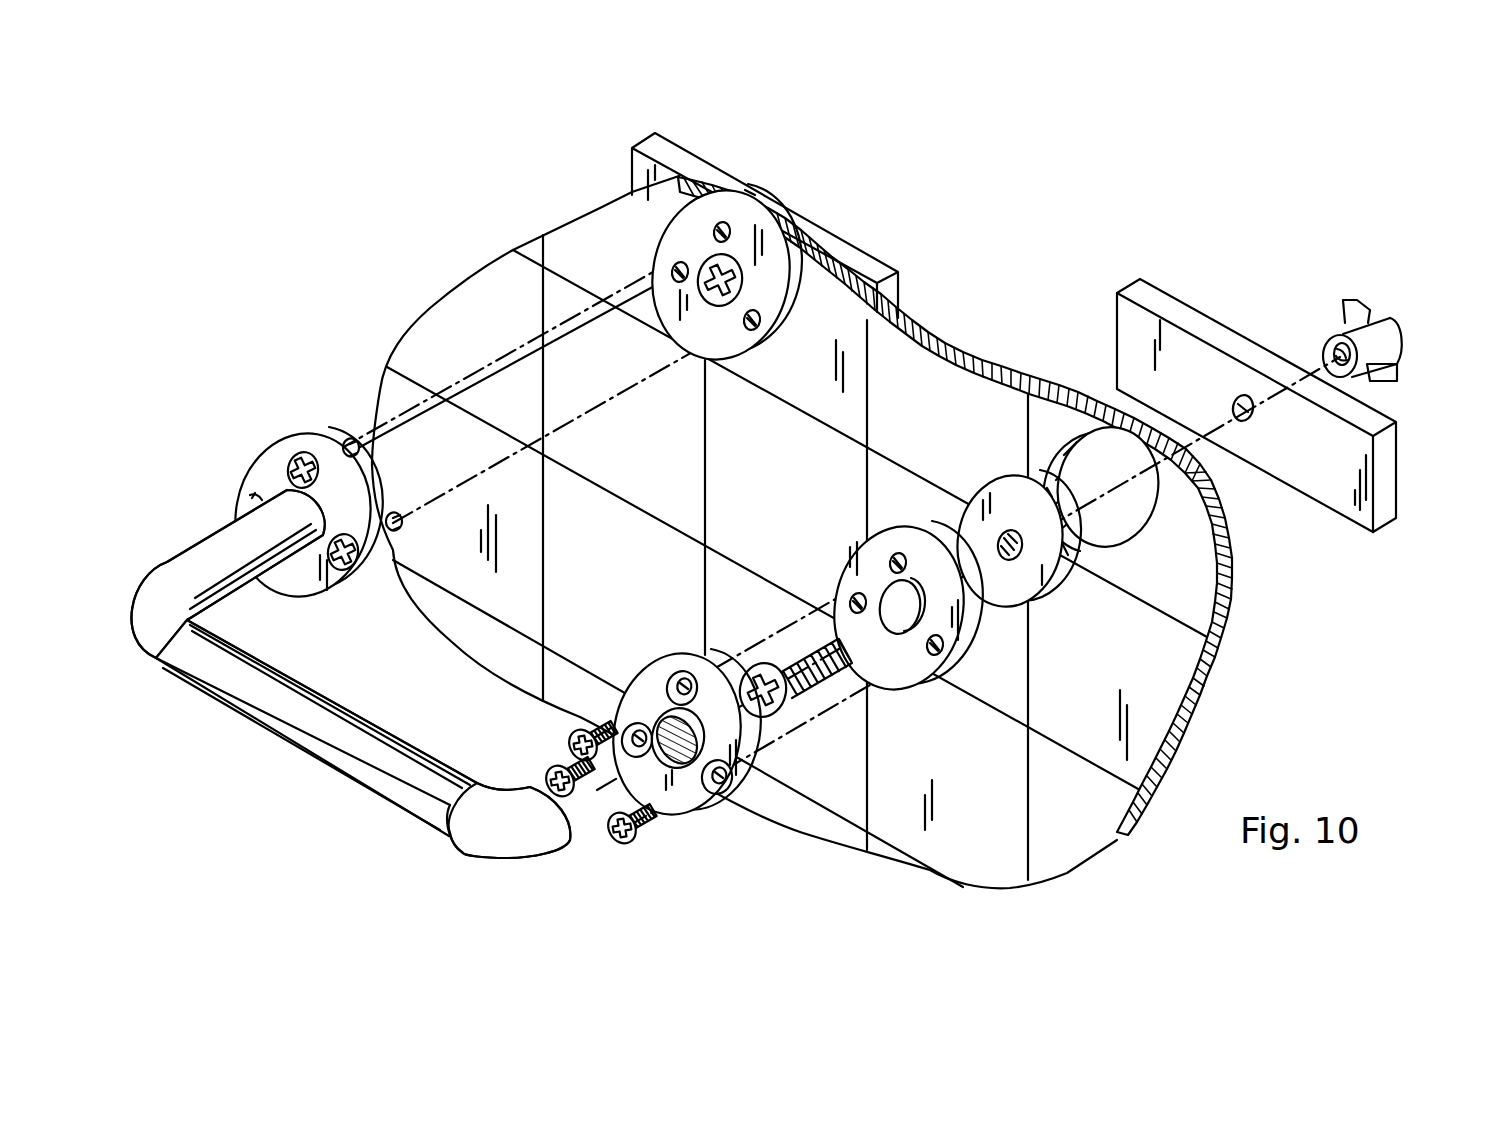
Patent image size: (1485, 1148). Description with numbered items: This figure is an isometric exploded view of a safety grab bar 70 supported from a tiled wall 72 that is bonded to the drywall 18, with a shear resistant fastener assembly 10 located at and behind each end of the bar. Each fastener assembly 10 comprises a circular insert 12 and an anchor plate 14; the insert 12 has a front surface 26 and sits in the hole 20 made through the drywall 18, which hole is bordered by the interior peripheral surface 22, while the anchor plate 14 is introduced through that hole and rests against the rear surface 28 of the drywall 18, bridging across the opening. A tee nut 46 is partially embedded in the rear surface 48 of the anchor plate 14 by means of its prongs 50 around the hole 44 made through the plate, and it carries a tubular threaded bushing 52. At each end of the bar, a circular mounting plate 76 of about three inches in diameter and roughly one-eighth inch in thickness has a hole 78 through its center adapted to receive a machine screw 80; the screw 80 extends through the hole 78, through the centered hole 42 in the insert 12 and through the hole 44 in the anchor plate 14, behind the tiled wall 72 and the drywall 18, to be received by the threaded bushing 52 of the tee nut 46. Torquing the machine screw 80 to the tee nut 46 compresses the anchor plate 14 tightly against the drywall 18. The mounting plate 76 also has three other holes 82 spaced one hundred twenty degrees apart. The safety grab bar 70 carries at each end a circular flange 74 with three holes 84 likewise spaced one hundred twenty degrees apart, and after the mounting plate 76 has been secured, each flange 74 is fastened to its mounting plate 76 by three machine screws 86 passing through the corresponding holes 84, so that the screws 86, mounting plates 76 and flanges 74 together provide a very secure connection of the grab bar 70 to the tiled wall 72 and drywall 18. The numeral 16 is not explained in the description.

The shear resistant fastener assembly 10 is at (681, 130).
The insert 12 is at (1022, 532).
The anchor plate 14 is at (1014, 362).
The bar front face 16 is at (1340, 508).
The drywall 18 is at (1022, 360).
The hole 20 is at (1161, 504).
The interior peripheral surface 22 is at (1117, 546).
The front surface 26 is at (1052, 572).
The rear surface 28 is at (1235, 592).
The hole 42 is at (1018, 557).
The hole 44 is at (1247, 421).
The tee nut 46 is at (1366, 321).
The rear surface 48 is at (750, 192).
The prongs 50 is at (1360, 315).
The tubular threaded bushing 52 is at (1373, 343).
The safety grab bar 70 is at (318, 770).
The tiled wall 72 is at (1166, 696).
The circular flange 74 is at (472, 636).
The circular mounting plate 76 is at (793, 458).
The hole 78 is at (897, 606).
The machine screw 80 is at (787, 667).
The holes 82 is at (714, 230).
The holes 84 is at (668, 682).
The machine screws 86 is at (298, 455).